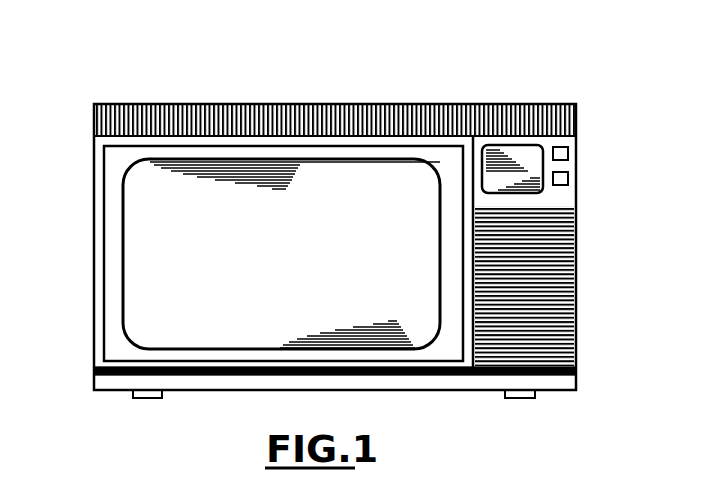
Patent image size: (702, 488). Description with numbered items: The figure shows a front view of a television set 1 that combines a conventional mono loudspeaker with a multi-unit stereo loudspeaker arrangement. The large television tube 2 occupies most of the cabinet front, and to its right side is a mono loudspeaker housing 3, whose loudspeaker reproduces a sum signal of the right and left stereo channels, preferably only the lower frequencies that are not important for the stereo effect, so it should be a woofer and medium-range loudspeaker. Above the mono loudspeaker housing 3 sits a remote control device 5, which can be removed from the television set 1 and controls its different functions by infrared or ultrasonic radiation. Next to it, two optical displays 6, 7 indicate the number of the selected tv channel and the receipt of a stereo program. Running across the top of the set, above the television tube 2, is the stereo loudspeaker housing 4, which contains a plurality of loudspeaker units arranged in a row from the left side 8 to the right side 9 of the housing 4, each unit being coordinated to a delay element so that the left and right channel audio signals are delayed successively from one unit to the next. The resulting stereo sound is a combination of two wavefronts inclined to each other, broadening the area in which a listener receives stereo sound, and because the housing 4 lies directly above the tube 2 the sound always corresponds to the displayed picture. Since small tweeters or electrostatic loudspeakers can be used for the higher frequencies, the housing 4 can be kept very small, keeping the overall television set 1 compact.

The television set 1 is at (499, 74).
The television tube 2 is at (143, 260).
The mono loudspeaker housing 3 is at (576, 275).
The stereo loudspeaker housing 4 is at (566, 118).
The remote control device 5 is at (528, 192).
The optical display 6 is at (568, 153).
The optical display 7 is at (568, 178).
The left side of the housing 8 is at (100, 122).
The right side of the housing 9 is at (576, 121).